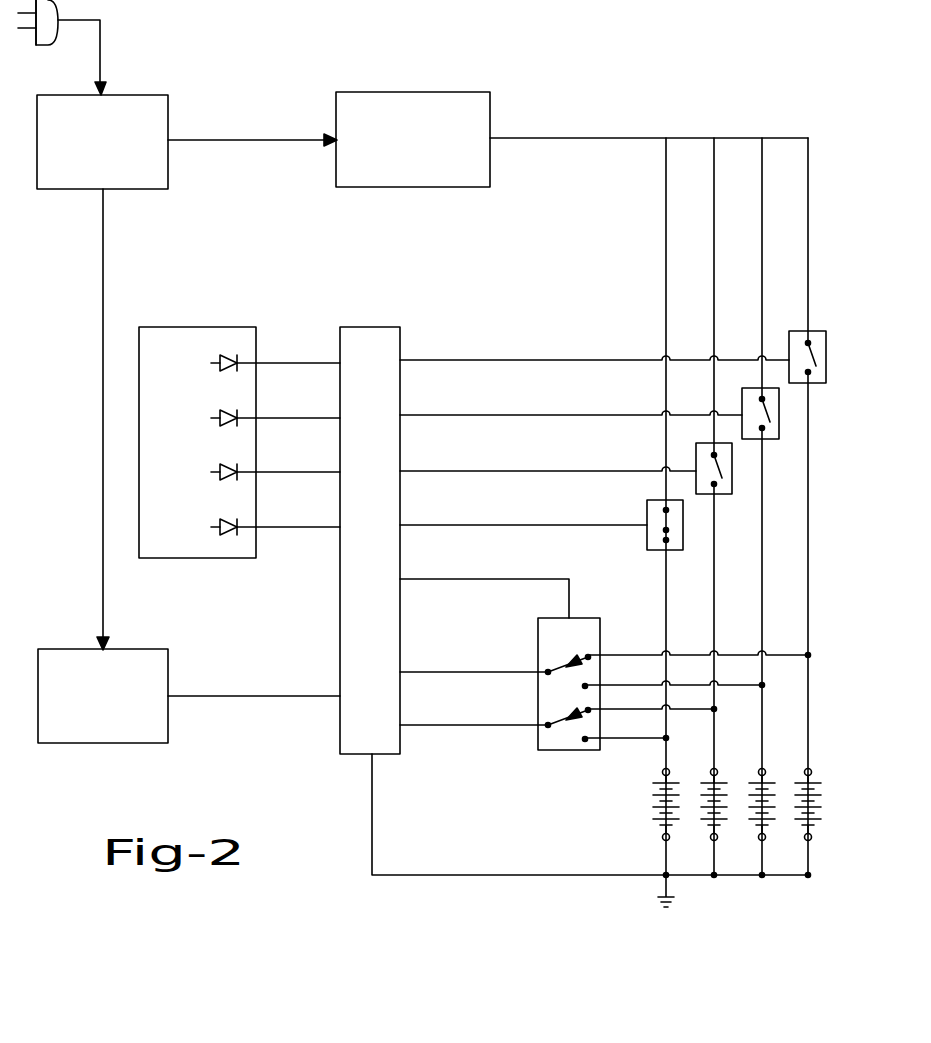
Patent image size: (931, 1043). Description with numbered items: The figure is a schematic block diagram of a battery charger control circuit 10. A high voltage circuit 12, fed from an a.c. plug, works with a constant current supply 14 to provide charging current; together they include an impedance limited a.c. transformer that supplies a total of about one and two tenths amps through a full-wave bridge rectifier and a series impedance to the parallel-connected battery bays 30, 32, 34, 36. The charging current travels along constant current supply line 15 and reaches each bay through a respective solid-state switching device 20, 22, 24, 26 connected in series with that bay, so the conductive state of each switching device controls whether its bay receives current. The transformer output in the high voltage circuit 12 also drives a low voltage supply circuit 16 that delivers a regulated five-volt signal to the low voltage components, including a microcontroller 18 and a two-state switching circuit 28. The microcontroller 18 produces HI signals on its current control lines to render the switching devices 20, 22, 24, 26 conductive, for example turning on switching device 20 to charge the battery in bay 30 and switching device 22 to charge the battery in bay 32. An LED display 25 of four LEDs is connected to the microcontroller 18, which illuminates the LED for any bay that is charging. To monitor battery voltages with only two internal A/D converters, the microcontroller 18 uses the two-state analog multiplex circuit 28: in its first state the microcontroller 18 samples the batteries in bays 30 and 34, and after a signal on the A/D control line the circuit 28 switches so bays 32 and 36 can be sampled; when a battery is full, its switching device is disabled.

The battery charger control circuit 10 is at (70, 413).
The high voltage circuit 12 is at (140, 95).
The constant current supply 14 is at (452, 92).
The constant current supply line 15 is at (738, 138).
The low voltage supply circuit 16 is at (73, 649).
The microcontroller 18 is at (380, 327).
The solid-state switching device 20 is at (826, 372).
The solid-state switching device 22 is at (779, 428).
The solid-state switching device 24 is at (732, 484).
The LED display 25 is at (211, 327).
The solid-state switching device 26 is at (683, 540).
The two-state analog multiplex circuit 28 is at (538, 742).
The battery charging bay 30 is at (812, 837).
The battery charging bay 32 is at (766, 837).
The battery charging bay 34 is at (710, 837).
The battery charging bay 36 is at (661, 772).